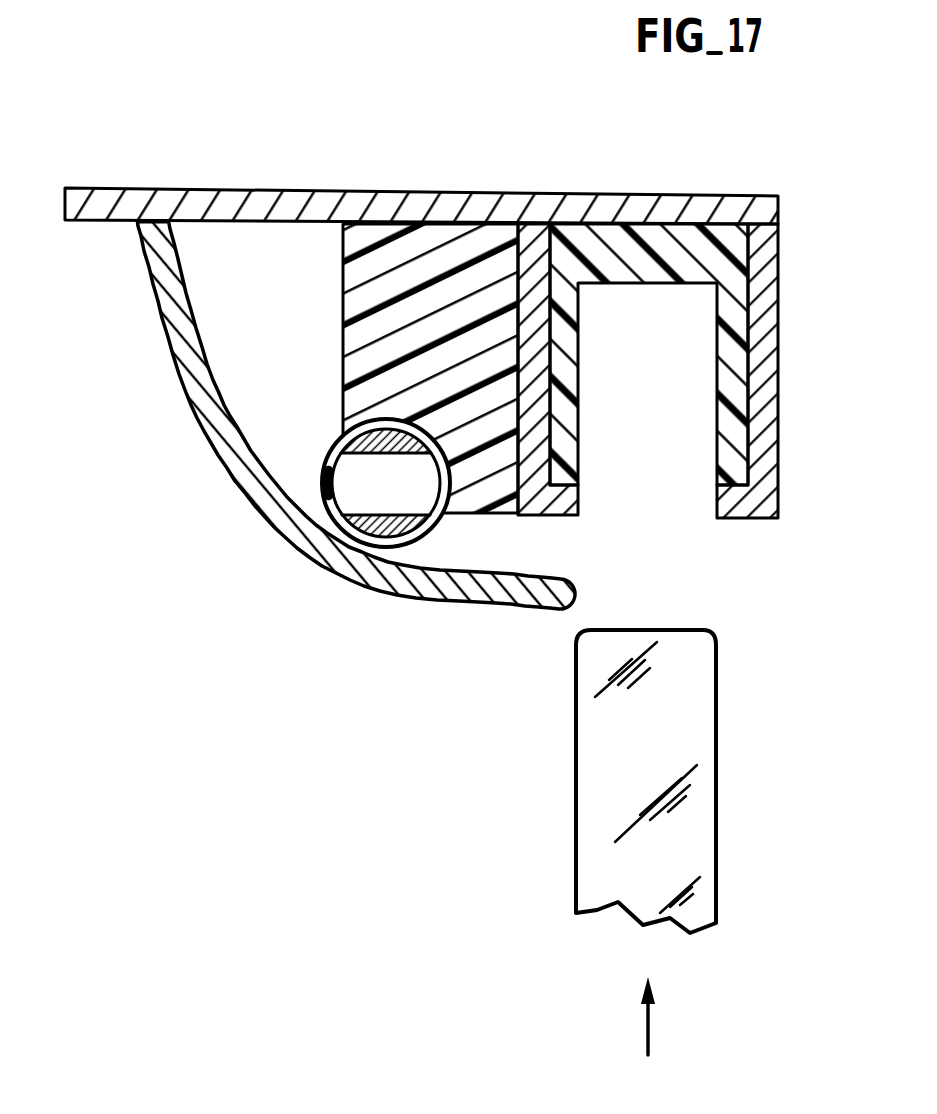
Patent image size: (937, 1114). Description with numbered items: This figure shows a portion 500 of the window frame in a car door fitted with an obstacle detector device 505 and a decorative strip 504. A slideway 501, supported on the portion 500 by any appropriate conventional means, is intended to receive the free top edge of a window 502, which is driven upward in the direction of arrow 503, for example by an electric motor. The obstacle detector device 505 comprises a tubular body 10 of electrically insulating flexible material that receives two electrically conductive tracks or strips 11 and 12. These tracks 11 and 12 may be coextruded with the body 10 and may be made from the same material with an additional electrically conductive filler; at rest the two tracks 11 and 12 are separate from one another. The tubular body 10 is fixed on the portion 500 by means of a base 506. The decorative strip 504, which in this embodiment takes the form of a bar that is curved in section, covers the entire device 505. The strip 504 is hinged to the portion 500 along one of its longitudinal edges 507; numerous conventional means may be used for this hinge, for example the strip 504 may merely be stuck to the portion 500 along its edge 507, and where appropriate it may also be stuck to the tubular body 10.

The portion of the window frame 500 is at (377, 192).
The slideway 501 is at (750, 412).
The window 502 is at (697, 768).
The arrow 503 is at (651, 1028).
The decorative strip 504 is at (321, 552).
The obstacle detector device 505 is at (309, 375).
The base 506 is at (385, 330).
The longitudinal edge 507 is at (128, 240).
The tubular body 10 is at (312, 552).
The electrically conductive track 11 is at (352, 417).
The electrically conductive track 12 is at (380, 553).